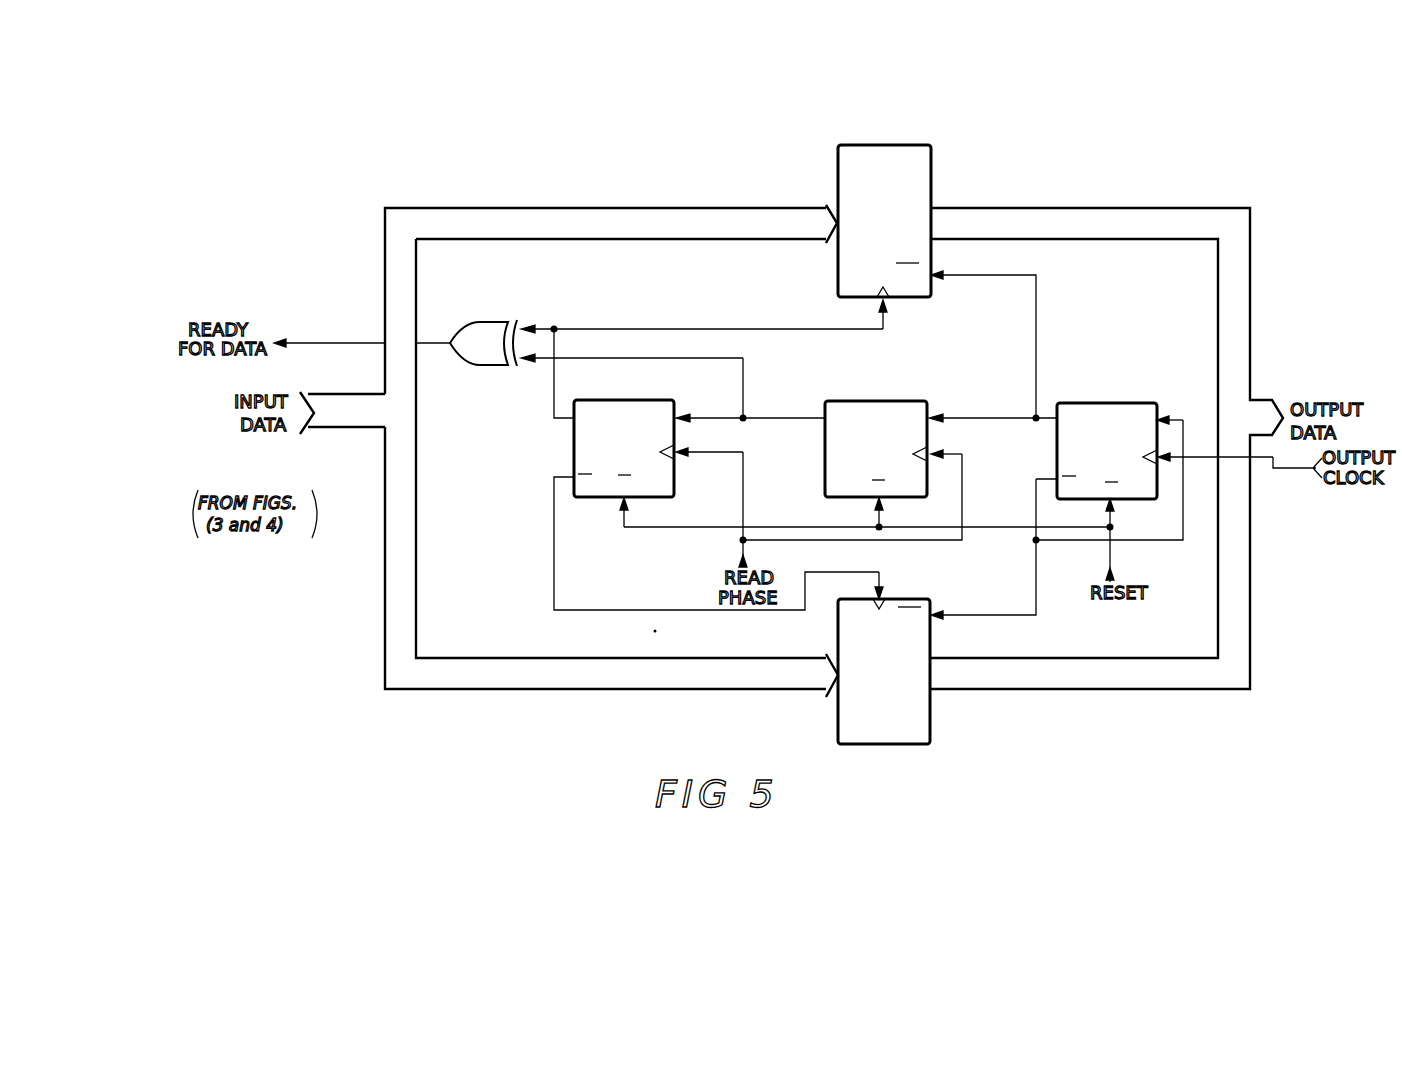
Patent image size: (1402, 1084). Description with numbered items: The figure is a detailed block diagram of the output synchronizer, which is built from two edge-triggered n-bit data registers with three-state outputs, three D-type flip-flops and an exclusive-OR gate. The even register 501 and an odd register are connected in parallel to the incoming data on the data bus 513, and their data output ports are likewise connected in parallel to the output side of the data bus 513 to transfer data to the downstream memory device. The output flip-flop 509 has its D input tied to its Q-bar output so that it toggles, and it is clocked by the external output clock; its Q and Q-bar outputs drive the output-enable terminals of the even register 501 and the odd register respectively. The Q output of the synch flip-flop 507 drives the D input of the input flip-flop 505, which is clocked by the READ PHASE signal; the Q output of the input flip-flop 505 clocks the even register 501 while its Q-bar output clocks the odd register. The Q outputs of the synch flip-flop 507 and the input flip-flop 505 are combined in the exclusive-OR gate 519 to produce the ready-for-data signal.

The even register 501 is at (888, 145).
The input flip-flop 505 is at (574, 444).
The synch flip-flop 507 is at (825, 455).
The output flip-flop 509 is at (1057, 455).
The data bus 513 is at (840, 636).
The exclusive-OR gate 519 is at (493, 320).